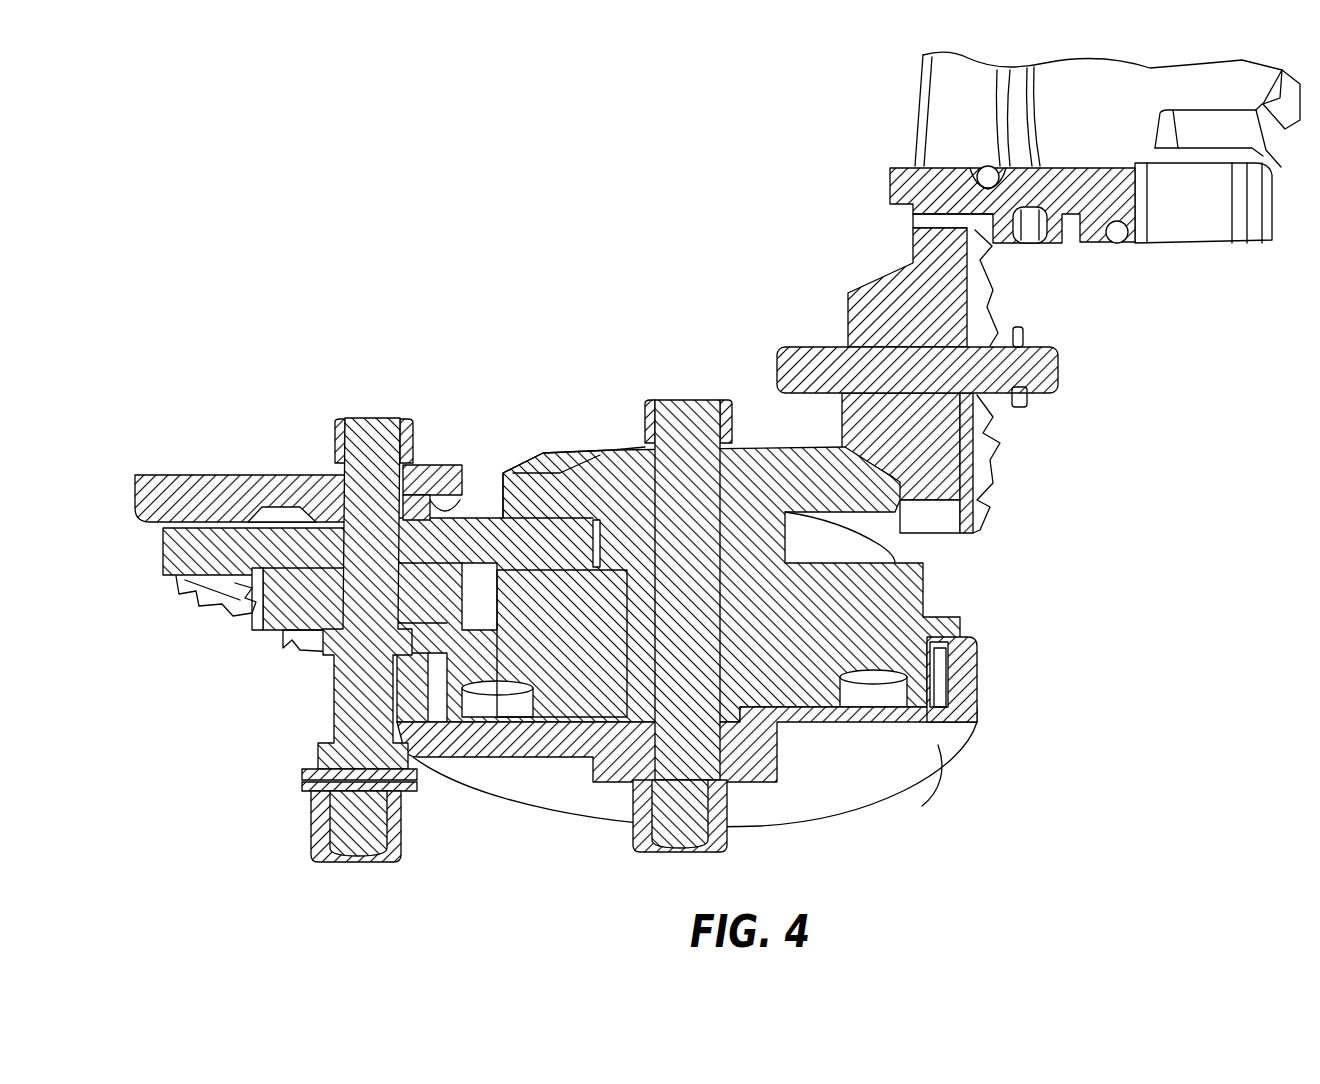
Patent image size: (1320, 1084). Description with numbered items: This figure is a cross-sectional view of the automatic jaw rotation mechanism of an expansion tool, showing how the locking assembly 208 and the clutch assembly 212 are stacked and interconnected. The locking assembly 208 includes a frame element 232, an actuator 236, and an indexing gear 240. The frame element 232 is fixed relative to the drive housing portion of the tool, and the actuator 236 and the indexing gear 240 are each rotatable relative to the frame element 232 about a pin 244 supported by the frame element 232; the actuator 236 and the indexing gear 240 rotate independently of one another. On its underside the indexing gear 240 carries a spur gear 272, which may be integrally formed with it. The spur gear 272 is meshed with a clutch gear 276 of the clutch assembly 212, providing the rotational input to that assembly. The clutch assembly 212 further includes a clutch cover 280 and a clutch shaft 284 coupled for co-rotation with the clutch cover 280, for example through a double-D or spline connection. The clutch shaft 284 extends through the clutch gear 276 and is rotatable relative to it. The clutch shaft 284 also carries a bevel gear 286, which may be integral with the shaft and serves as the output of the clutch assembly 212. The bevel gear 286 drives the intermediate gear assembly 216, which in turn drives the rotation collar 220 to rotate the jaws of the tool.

The locking assembly 208 is at (298, 352).
The clutch assembly 212 is at (897, 819).
The intermediate gear assembly 216 is at (830, 253).
The rotation collar 220 is at (955, 142).
The frame element 232 is at (287, 510).
The actuator 236 is at (180, 490).
The indexing gear 240 is at (207, 580).
The pin 244 is at (333, 718).
The spur gear 272 is at (303, 648).
The clutch gear 276 is at (500, 658).
The clutch cover 280 is at (965, 683).
The clutch shaft 284 is at (645, 540).
The bevel gear 286 is at (565, 450).